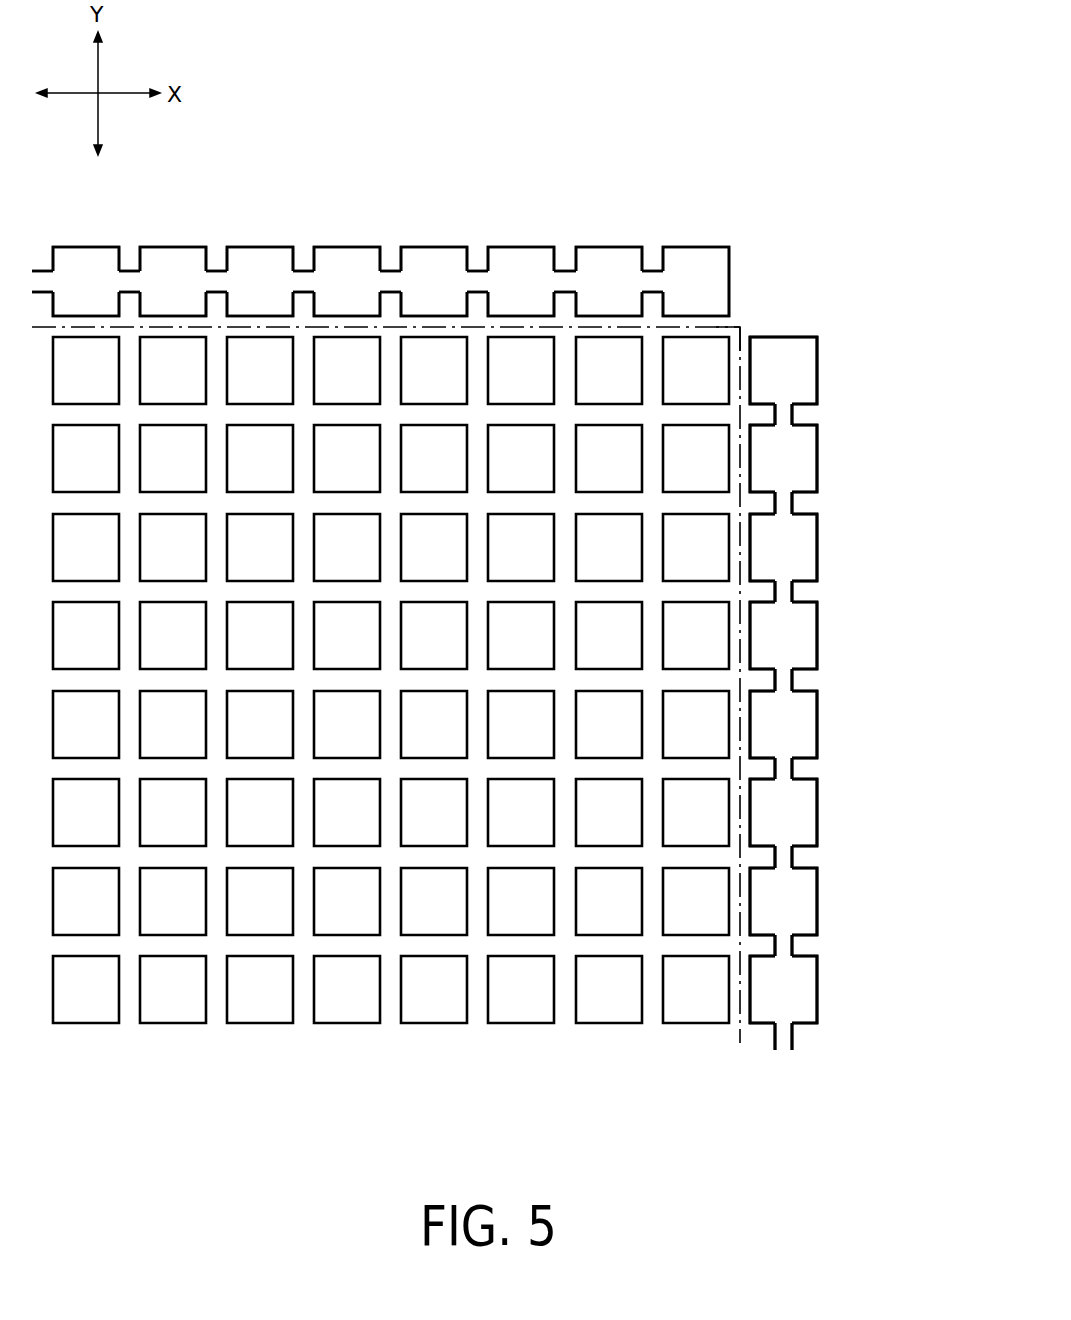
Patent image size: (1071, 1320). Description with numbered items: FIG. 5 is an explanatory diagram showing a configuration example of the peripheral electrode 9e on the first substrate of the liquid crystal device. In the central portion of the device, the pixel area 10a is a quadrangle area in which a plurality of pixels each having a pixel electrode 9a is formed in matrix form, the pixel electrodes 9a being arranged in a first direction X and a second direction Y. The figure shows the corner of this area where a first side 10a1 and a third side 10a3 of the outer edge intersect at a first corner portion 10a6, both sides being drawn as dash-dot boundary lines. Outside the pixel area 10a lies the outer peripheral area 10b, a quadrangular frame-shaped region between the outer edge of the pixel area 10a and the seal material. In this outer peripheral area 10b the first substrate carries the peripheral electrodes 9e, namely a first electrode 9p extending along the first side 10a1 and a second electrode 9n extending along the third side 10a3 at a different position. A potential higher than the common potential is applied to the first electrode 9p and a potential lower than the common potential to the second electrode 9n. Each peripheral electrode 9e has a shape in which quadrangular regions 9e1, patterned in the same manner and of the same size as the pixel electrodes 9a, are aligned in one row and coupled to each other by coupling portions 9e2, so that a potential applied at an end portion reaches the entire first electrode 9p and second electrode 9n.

The pixel electrode 9a is at (525, 738).
The peripheral electrode 9e is at (490, 602).
The first electrode 9p is at (340, 263).
The second electrode 9n is at (795, 459).
The quadrangular region 9e1 is at (175, 260).
The coupling portion 9e2 is at (218, 278).
The pixel area 10a is at (474, 657).
The first side 10a1 is at (500, 327).
The third side 10a3 is at (740, 535).
The first corner portion 10a6 is at (741, 325).
The outer peripheral area 10b is at (753, 1045).